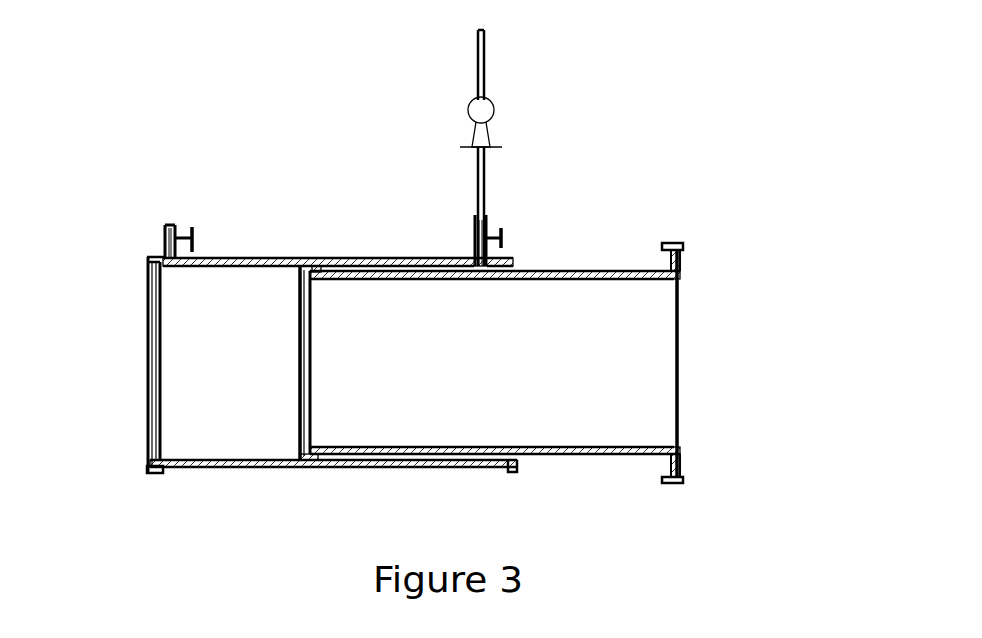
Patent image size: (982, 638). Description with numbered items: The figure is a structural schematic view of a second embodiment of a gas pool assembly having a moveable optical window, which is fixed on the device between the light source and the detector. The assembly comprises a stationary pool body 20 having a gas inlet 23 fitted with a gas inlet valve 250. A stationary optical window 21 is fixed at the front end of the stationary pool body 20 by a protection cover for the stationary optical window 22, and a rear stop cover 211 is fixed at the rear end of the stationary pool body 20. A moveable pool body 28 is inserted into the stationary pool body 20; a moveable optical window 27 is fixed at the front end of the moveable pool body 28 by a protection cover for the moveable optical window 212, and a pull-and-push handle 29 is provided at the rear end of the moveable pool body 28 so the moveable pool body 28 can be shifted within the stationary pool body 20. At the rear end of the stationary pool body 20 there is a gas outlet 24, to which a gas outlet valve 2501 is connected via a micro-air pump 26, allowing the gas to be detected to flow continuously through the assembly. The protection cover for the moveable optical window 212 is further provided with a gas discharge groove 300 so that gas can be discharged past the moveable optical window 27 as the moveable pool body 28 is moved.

The stationary pool body 20 is at (220, 435).
The stationary optical window 21 is at (148, 475).
The protection cover for the stationary optical window 22 is at (146, 390).
The gas inlet 23 is at (163, 225).
The gas outlet 24 is at (483, 33).
The micro-air pump 26 is at (477, 138).
The moveable optical window 27 is at (303, 385).
The moveable pool body 28 is at (545, 430).
The pull-and-push handle 29 is at (681, 483).
The rear stop cover 211 is at (512, 472).
The protection cover for the moveable optical window 212 is at (308, 270).
The gas inlet valve 250 is at (155, 252).
The gas discharge groove 300 is at (312, 268).
The gas outlet valve 2501 is at (503, 237).